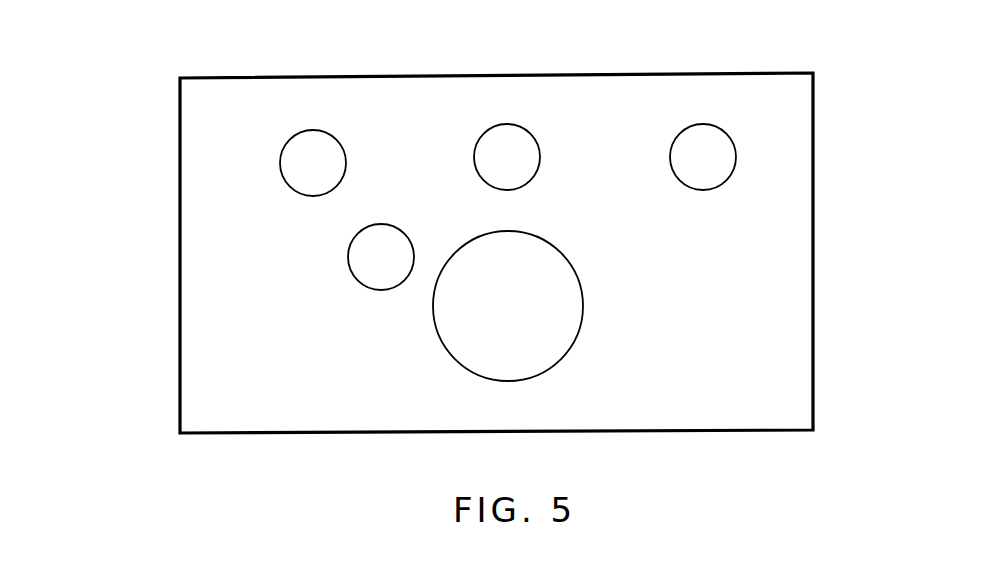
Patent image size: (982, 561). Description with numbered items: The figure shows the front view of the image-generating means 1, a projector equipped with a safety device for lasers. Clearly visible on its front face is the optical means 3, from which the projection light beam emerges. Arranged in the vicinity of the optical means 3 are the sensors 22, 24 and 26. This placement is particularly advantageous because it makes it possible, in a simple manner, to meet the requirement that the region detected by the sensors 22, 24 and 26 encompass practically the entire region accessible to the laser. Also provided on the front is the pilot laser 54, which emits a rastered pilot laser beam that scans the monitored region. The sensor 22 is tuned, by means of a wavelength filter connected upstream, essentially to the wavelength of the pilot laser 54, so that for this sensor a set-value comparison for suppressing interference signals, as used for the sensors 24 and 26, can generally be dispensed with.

The image-generating means 1 is at (190, 451).
The optical means 3 is at (530, 327).
The sensor 22 is at (513, 143).
The sensor 24 is at (297, 147).
The sensor 26 is at (722, 137).
The pilot laser 54 is at (363, 270).